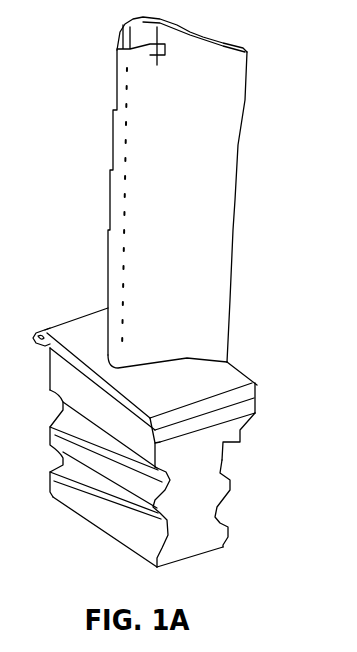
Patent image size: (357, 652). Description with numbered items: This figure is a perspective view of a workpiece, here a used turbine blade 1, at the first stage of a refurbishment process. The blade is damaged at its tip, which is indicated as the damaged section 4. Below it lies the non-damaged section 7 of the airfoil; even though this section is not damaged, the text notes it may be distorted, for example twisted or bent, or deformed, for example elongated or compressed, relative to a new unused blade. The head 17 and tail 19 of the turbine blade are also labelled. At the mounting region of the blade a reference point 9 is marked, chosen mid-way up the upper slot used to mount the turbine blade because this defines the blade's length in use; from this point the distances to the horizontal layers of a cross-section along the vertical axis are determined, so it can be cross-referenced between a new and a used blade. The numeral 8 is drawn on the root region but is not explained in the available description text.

The used turbine blade 1 is at (182, 264).
The damaged section 4 is at (160, 65).
The non-damaged section 7 is at (195, 205).
The blade root 8 is at (195, 495).
The reference point 9 is at (172, 486).
The head 17 is at (114, 155).
The tail 19 is at (244, 125).